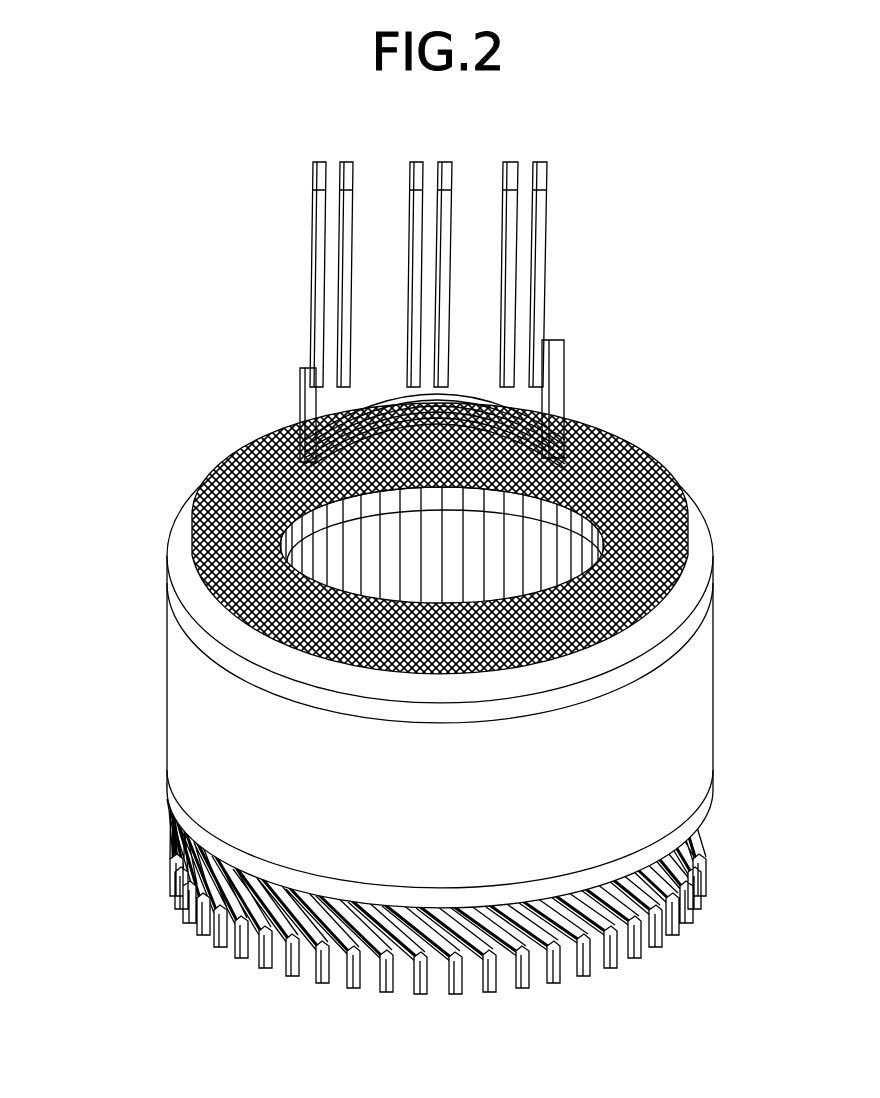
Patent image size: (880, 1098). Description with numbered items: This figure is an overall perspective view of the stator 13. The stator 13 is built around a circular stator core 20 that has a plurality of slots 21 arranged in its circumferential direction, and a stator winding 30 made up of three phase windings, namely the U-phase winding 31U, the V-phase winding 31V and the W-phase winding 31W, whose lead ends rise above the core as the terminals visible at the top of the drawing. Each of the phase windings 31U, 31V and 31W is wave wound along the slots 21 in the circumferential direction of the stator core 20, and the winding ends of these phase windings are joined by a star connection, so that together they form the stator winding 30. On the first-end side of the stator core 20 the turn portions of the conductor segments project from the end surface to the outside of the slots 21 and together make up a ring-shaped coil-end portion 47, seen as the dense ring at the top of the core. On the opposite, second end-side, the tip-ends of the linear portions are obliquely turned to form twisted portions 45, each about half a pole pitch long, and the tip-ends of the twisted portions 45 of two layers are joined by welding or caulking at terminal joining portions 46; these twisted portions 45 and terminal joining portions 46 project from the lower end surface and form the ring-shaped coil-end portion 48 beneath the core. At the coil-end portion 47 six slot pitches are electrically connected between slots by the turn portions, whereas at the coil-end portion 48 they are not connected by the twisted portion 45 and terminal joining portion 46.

The stator 13 is at (633, 338).
The stator core 20 is at (166, 683).
The slots 21 is at (473, 543).
The stator winding 30 is at (232, 452).
The U-phase winding 31U is at (490, 162).
The V-phase winding 31V is at (393, 162).
The W-phase winding 31W is at (298, 162).
The twisted portion 45 is at (532, 977).
The terminal joining portion 46 is at (425, 985).
The coil-end portion 47 is at (660, 466).
The coil-end portion 48 is at (690, 852).